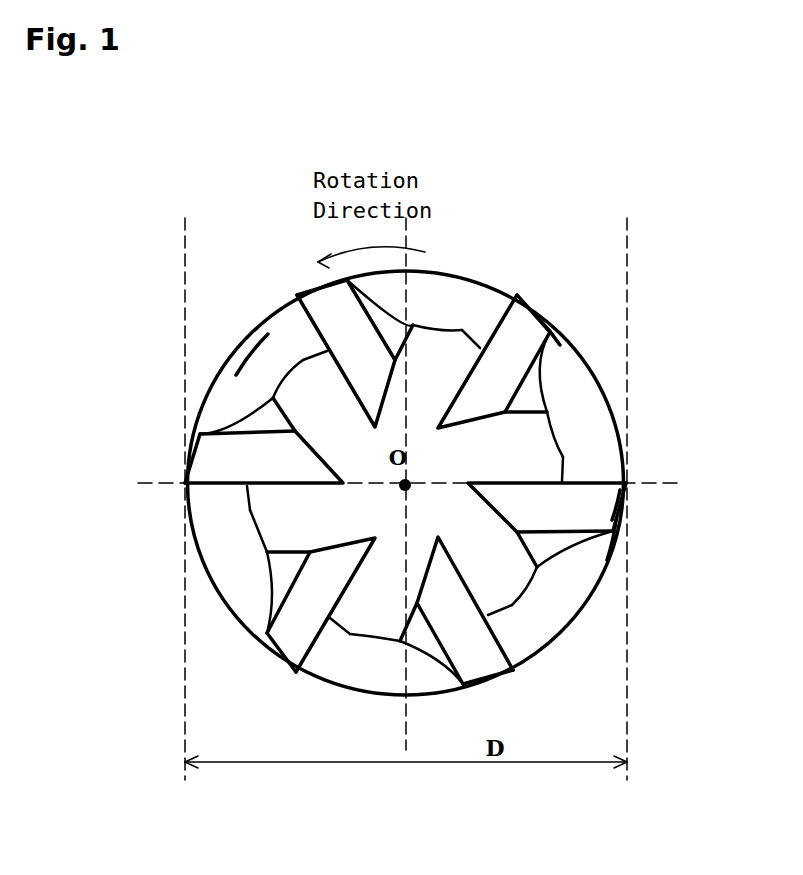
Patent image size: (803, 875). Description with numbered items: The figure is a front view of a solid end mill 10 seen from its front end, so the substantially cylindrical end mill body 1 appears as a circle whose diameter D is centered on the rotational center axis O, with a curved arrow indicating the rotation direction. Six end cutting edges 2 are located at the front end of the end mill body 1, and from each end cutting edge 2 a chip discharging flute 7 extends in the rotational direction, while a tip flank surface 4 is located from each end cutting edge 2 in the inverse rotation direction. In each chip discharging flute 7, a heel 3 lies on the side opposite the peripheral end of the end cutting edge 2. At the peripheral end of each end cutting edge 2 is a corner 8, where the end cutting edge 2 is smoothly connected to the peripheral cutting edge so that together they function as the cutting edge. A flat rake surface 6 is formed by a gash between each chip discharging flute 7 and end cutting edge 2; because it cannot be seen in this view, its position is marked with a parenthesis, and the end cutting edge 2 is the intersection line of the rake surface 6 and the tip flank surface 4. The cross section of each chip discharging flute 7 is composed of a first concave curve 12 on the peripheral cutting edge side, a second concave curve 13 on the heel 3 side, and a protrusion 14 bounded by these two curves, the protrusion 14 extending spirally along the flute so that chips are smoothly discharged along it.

The end mill body 1 is at (222, 372).
The end cutting edge 2 is at (496, 327).
The heel 3 is at (553, 330).
The tip flank surface 4 is at (522, 332).
The rake surface 6 is at (613, 497).
The chip discharging flute 7 is at (410, 482).
The corner 8 is at (297, 293).
The end mill 10 is at (255, 303).
The first concave curve 12 is at (575, 480).
The second concave curve 13 is at (552, 410).
The protrusion 14 is at (567, 453).